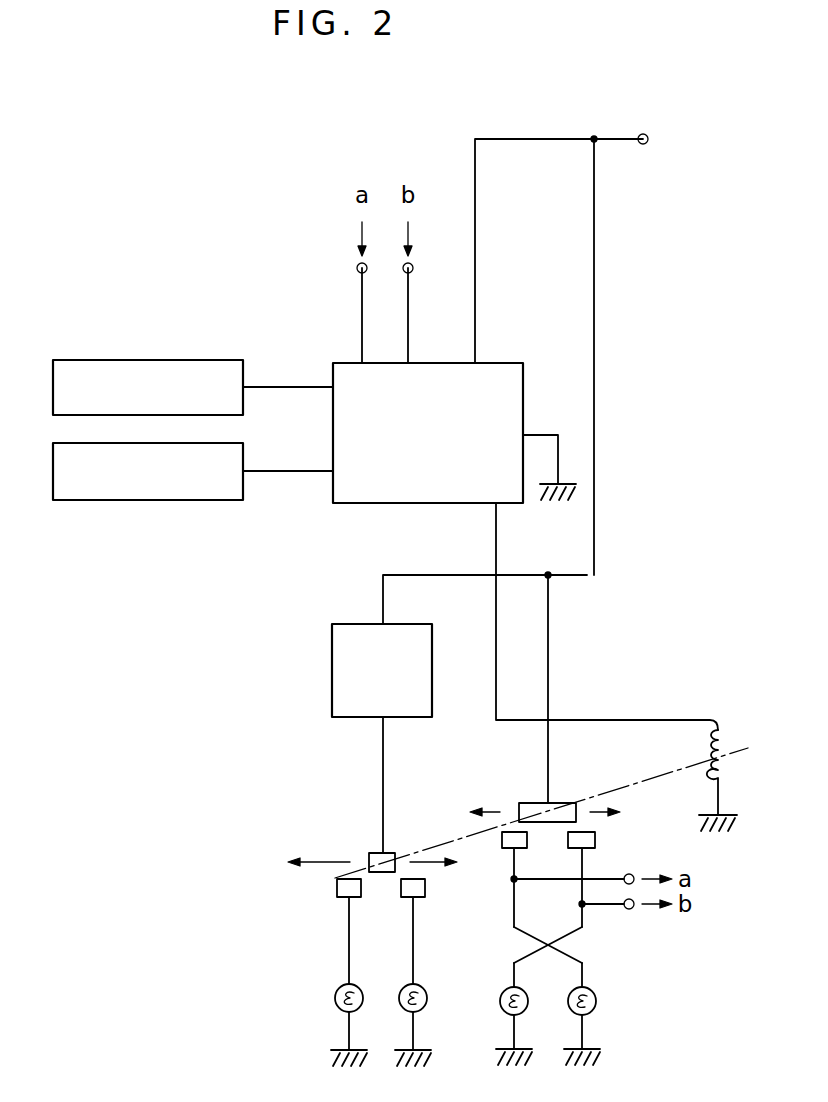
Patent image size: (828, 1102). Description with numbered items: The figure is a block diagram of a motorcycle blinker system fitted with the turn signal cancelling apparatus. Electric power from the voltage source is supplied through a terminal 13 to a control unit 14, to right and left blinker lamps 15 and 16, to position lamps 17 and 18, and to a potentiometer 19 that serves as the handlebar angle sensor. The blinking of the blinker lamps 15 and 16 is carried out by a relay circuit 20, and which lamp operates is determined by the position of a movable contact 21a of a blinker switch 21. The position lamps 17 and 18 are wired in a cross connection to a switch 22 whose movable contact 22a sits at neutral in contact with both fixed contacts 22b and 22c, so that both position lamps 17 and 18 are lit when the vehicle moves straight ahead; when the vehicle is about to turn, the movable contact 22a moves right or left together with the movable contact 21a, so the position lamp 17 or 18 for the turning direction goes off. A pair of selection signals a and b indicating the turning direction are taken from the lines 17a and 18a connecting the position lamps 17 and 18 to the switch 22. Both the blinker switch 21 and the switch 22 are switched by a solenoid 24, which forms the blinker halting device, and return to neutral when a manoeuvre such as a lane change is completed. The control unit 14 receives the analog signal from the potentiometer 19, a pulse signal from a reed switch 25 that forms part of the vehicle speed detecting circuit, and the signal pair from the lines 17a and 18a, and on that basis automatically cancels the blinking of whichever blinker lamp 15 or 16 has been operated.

The terminal 13 is at (641, 133).
The control unit 14 is at (505, 363).
The blinker lamp 15 is at (330, 1007).
The blinker lamp 16 is at (412, 1007).
The position lamp 17 is at (522, 1005).
The line 17a is at (575, 932).
The position lamp 18 is at (596, 1005).
The line 18a is at (512, 918).
The potentiometer 19 is at (155, 360).
The relay circuit 20 is at (332, 668).
The blinker switch 21 is at (353, 843).
The movable contact 21a is at (393, 853).
The switch 22 is at (567, 791).
The movable contact 22a is at (525, 803).
The fixed contact 22b is at (505, 850).
The fixed contact 22c is at (597, 842).
The solenoid 24 is at (727, 735).
The reed switch 25 is at (156, 500).